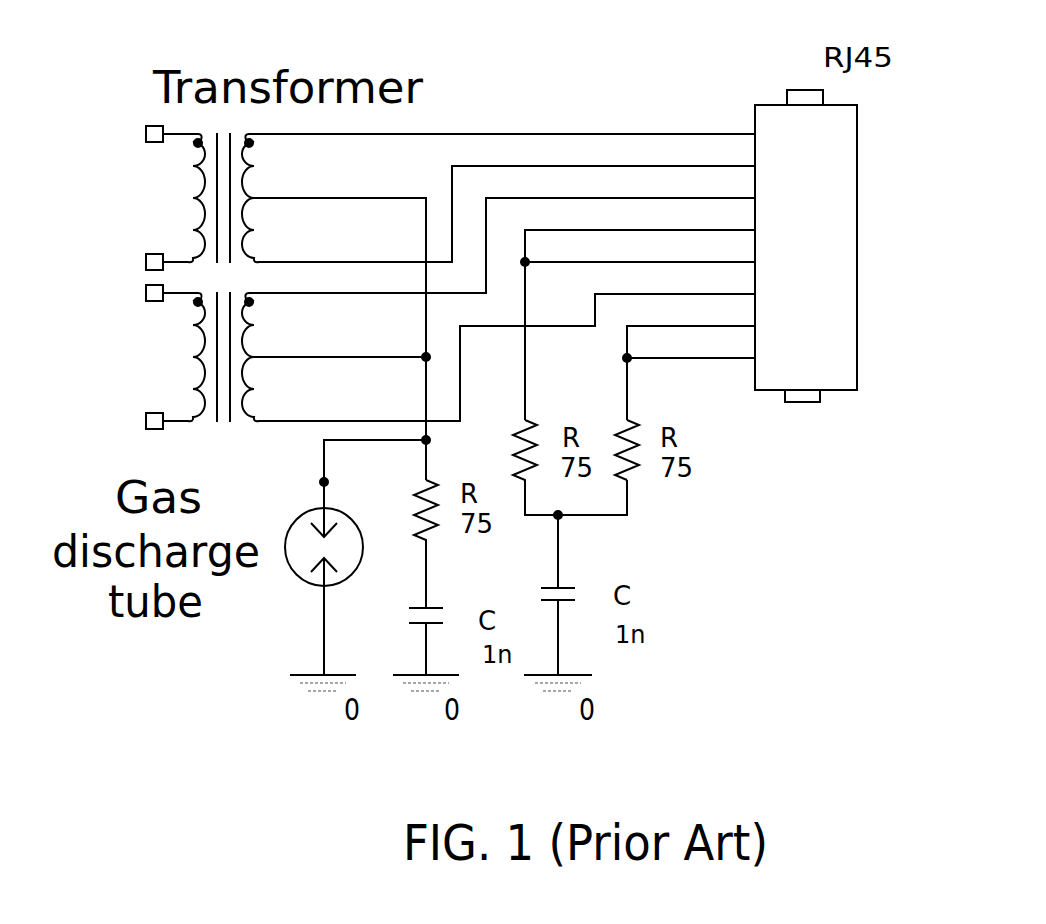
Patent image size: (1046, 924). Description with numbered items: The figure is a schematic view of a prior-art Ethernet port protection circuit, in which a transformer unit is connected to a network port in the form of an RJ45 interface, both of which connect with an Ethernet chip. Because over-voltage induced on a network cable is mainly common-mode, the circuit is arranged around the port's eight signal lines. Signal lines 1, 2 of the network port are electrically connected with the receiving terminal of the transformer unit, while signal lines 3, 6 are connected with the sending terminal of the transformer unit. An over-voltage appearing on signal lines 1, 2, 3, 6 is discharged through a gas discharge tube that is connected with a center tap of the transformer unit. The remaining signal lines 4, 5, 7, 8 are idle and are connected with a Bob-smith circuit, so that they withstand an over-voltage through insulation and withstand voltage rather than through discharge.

The signal line 1 is at (506, 123).
The signal line 2 is at (506, 202).
The signal line 3 is at (506, 234).
The signal line 4 is at (640, 313).
The signal line 5 is at (638, 252).
The signal line 6 is at (506, 346).
The signal line 7 is at (691, 361).
The signal line 8 is at (689, 348).